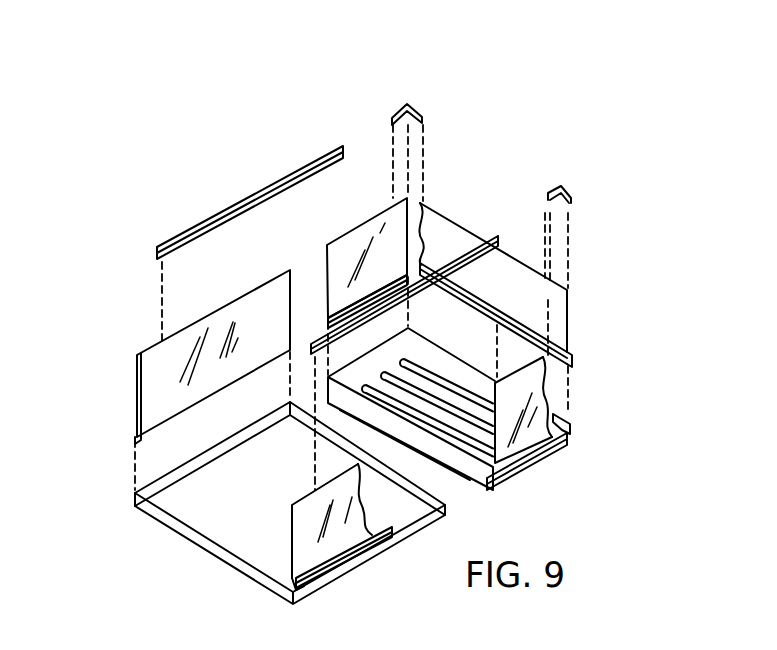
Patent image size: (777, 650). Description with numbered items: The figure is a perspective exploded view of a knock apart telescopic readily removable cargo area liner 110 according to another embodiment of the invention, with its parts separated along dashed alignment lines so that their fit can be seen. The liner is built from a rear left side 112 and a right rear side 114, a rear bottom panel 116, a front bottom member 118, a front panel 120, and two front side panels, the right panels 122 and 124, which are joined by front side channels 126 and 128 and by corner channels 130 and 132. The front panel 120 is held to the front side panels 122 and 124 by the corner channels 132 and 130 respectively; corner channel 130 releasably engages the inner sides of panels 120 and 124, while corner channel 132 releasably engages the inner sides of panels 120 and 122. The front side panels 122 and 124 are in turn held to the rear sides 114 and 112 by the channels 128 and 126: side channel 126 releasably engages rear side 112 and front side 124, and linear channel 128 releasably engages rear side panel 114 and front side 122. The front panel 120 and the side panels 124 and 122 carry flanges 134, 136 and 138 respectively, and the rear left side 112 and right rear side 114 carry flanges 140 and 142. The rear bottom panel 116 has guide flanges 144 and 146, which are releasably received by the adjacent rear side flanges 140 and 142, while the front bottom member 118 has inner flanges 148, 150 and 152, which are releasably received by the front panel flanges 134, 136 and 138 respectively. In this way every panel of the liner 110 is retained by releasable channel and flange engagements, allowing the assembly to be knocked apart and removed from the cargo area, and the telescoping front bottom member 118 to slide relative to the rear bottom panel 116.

The cargo area liner 110 is at (529, 101).
The rear left side 112 is at (135, 388).
The right rear side 114 is at (293, 553).
The rear bottom panel 116 is at (218, 530).
The front bottom member 118 is at (467, 491).
The front panel 120 is at (448, 216).
The right panel 122 is at (545, 396).
The right panel 124 is at (373, 210).
The front side channel 126 is at (203, 222).
The front side channel 128 is at (461, 253).
The corner channel 130 is at (405, 102).
The corner channel 132 is at (568, 198).
The flange 134 is at (570, 355).
The flange 136 is at (328, 318).
The flange 138 is at (548, 443).
The flange 140 is at (135, 432).
The flange 142 is at (297, 590).
The guide flange 144 is at (197, 453).
The guide flange 146 is at (387, 540).
The flange 148 is at (420, 336).
The flange 150 is at (348, 363).
The flange 152 is at (570, 428).